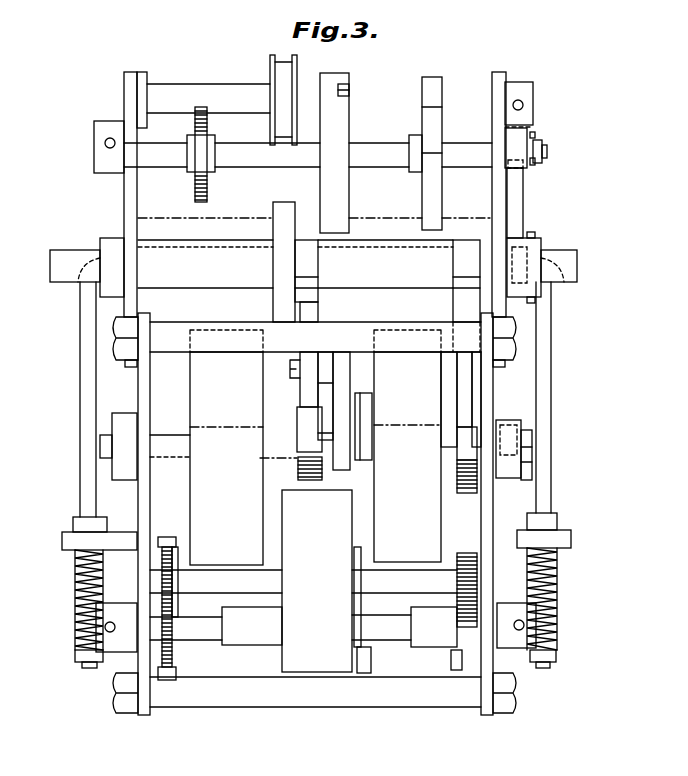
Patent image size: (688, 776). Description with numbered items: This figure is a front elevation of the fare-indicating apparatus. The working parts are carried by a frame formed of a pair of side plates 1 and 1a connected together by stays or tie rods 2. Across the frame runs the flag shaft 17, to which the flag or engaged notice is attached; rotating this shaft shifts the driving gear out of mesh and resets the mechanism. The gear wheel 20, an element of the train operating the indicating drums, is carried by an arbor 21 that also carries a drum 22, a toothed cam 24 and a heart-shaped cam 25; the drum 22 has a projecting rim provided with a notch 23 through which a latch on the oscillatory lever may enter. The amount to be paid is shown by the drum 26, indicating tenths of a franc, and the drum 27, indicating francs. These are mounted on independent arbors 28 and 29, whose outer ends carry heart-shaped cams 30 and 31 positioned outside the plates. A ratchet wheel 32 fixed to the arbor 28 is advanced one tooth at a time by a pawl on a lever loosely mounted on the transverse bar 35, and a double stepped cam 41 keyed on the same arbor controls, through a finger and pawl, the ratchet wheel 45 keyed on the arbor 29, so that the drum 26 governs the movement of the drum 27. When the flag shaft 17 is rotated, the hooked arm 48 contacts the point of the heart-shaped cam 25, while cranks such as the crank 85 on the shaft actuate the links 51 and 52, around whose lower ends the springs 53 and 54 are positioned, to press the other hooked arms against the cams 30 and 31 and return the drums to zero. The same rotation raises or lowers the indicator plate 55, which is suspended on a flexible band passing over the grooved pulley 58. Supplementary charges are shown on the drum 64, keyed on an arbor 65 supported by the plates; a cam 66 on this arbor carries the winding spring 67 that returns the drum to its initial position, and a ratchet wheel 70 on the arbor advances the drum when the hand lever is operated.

The side plate 1 is at (145, 505).
The side plate 1a is at (500, 86).
The stays or tie rods 2 is at (177, 343).
The flag shaft 17 is at (78, 264).
The gear wheel 20 is at (196, 192).
The arbor 21 is at (401, 158).
The drum 22 is at (349, 200).
The notch 23 is at (351, 90).
The toothed cam 24 is at (431, 92).
The heart-shaped cam 25 is at (520, 138).
The drum 26 is at (381, 367).
The drum 27 is at (230, 382).
The arbor 28 is at (530, 440).
The arbor 29 is at (163, 445).
The heart-shaped cam 30 is at (505, 468).
The heart-shaped cam 31 is at (130, 415).
The ratchet wheel 32 is at (462, 494).
The transverse bar 35 is at (381, 630).
The double stepped cam 41 is at (345, 400).
The ratchet wheel 45 is at (291, 419).
The arm 48 is at (513, 192).
The link 51 is at (543, 503).
The link 52 is at (93, 473).
The spring 53 is at (558, 591).
The spring 54 is at (78, 618).
The indicator plate 55 is at (162, 220).
The grooved pulley 58 is at (285, 95).
The drum 64 is at (302, 508).
The arbor 65 is at (258, 586).
The cam 66 is at (181, 561).
The spring 67 is at (171, 653).
The ratchet wheel 70 is at (455, 616).
The crank 85 is at (116, 282).